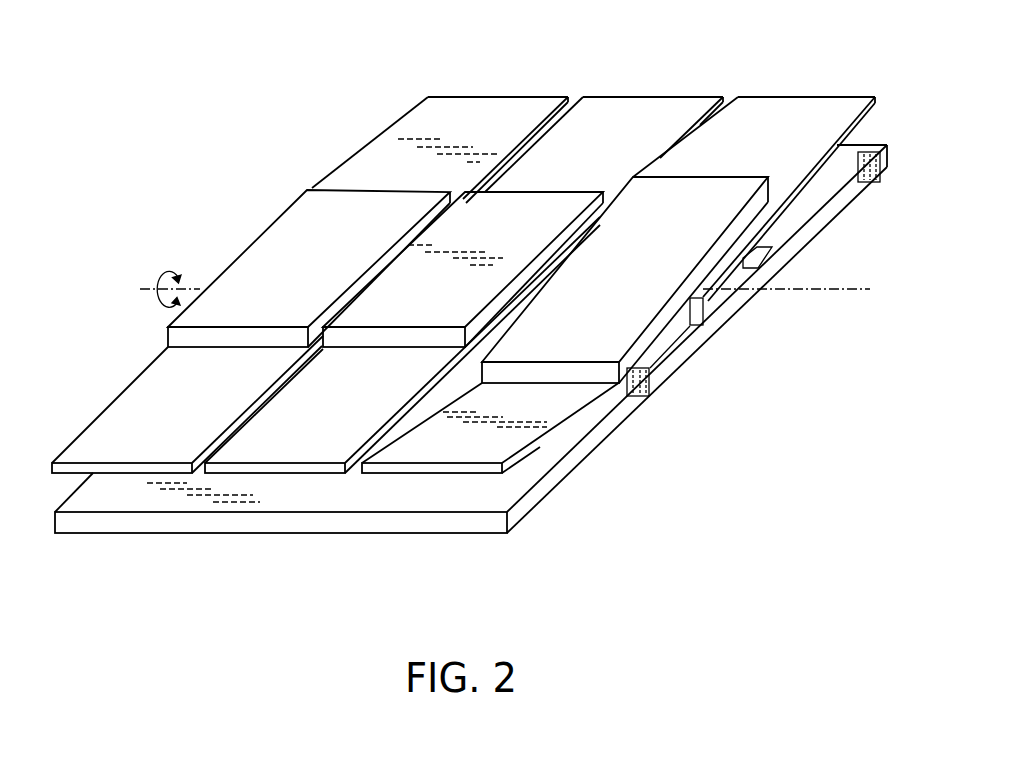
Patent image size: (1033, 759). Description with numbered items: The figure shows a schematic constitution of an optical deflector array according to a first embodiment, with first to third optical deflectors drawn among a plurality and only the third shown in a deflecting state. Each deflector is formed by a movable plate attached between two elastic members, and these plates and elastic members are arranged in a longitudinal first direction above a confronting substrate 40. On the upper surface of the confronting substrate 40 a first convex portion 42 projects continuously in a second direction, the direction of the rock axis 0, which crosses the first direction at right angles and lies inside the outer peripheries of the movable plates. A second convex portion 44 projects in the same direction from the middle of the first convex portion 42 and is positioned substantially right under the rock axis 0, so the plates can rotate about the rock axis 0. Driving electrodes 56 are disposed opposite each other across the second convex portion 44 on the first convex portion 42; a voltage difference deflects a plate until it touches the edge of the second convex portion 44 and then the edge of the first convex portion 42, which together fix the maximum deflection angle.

The confronting substrate 40 is at (572, 458).
The first convex portion 42 is at (665, 367).
The second convex portion 44 is at (703, 307).
The driving electrode 56 is at (750, 251).
The rock axis 0 is at (160, 289).